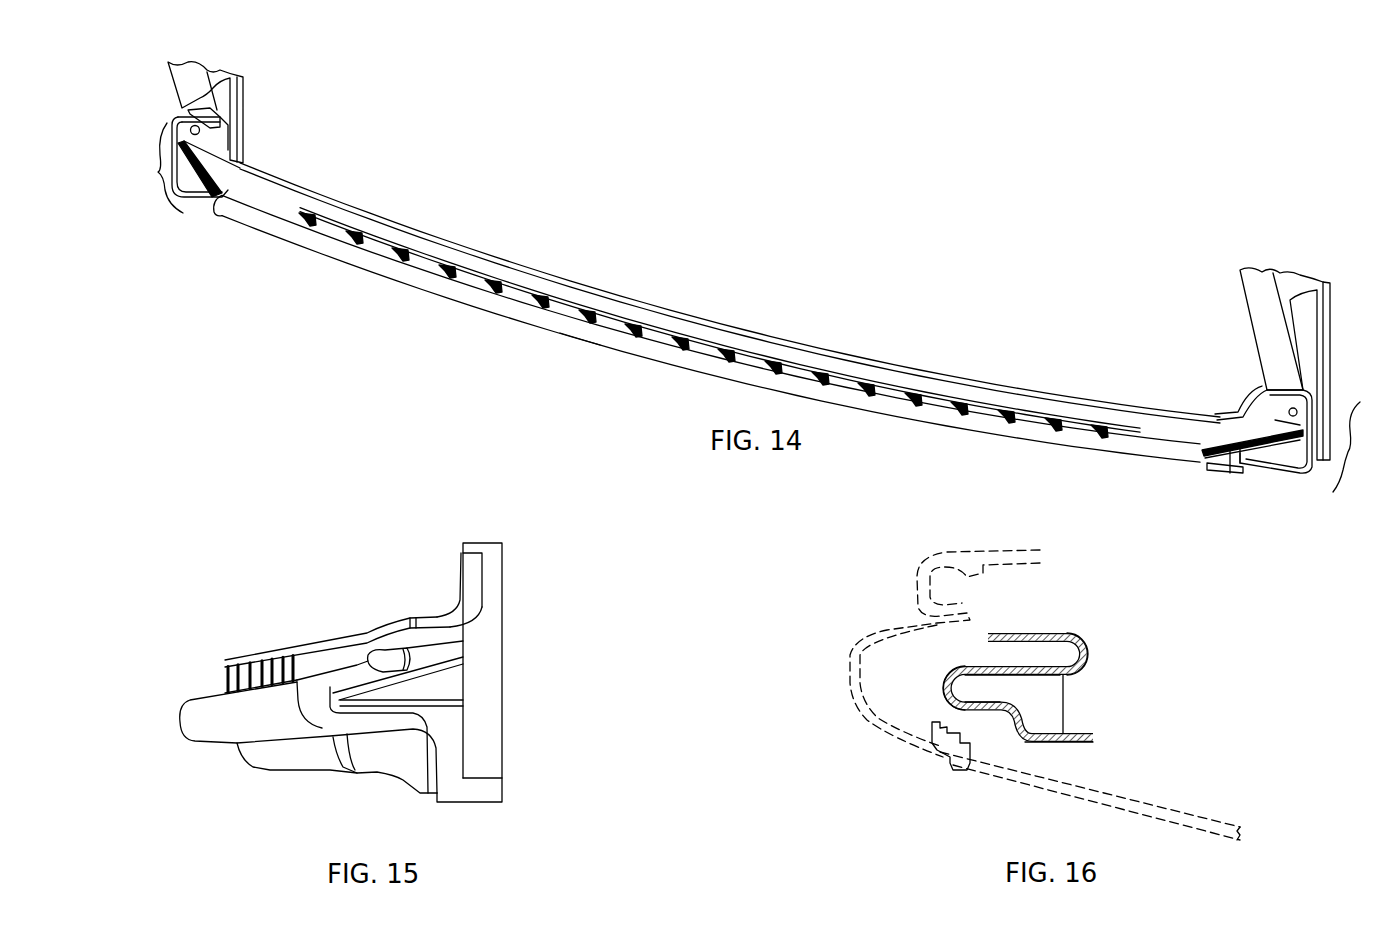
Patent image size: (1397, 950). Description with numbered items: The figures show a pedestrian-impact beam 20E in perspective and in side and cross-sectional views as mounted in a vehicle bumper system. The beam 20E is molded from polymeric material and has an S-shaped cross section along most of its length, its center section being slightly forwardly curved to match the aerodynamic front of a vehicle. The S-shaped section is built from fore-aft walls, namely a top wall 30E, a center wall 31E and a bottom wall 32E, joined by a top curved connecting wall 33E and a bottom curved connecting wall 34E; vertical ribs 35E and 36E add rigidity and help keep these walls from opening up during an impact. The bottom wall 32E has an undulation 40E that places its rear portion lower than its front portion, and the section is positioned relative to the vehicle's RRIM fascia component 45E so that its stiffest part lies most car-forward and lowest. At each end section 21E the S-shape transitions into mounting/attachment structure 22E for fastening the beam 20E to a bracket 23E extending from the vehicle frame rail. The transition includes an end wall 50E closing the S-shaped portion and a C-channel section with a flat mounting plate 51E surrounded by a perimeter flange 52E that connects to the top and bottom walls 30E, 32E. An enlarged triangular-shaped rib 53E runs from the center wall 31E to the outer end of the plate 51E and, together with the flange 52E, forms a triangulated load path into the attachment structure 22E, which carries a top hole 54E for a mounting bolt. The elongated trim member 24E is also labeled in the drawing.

In FIG. 14, the beam 20E is at (858, 152).
In FIG. 15, the beam 20E is at (287, 575).
In FIG. 16, the beam 20E is at (1097, 630).
In FIG. 14, the end sections 21E is at (759, 307).
In FIG. 14, the mounting/attachment structure 22E is at (205, 110).
In FIG. 14, the bracket 23E is at (182, 77).
In FIG. 14, the elongated trim member 24E is at (620, 343).
In FIG. 14, the top wall 30E is at (630, 310).
In FIG. 15, the top wall 30E is at (283, 647).
In FIG. 16, the top wall 30E is at (1030, 630).
In FIG. 16, the center wall 31E is at (1037, 673).
In FIG. 14, the bottom wall 32E is at (947, 423).
In FIG. 15, the bottom wall 32E is at (290, 770).
In FIG. 16, the bottom wall 32E is at (1063, 740).
In FIG. 14, the top curved connecting wall 33E is at (907, 370).
In FIG. 16, the top curved connecting wall 33E is at (1095, 645).
In FIG. 14, the bottom curved connecting wall 34E is at (400, 277).
In FIG. 15, the bottom curved connecting wall 34E is at (188, 723).
In FIG. 16, the bottom curved connecting wall 34E is at (947, 687).
In FIG. 14, the vertical rib 35E is at (507, 287).
In FIG. 15, the vertical rib 35E is at (243, 680).
In FIG. 16, the vertical rib 35E is at (987, 653).
In FIG. 16, the vertical rib 36E is at (1053, 712).
In FIG. 15, the undulation 40E is at (397, 740).
In FIG. 16, the undulation 40E is at (1003, 712).
In FIG. 16, the RRIM fascia component 45E is at (852, 687).
In FIG. 14, the end wall 50E is at (1233, 470).
In FIG. 15, the end wall 50E is at (450, 727).
In FIG. 14, the mounting plate 51E is at (1255, 403).
In FIG. 15, the mounting plate 51E is at (503, 637).
In FIG. 14, the perimeter flange 52E is at (197, 193).
In FIG. 15, the perimeter flange 52E is at (487, 543).
In FIG. 14, the triangular-shaped rib 53E is at (207, 167).
In FIG. 15, the triangular-shaped rib 53E is at (453, 680).
In FIG. 14, the top hole 54E is at (183, 130).